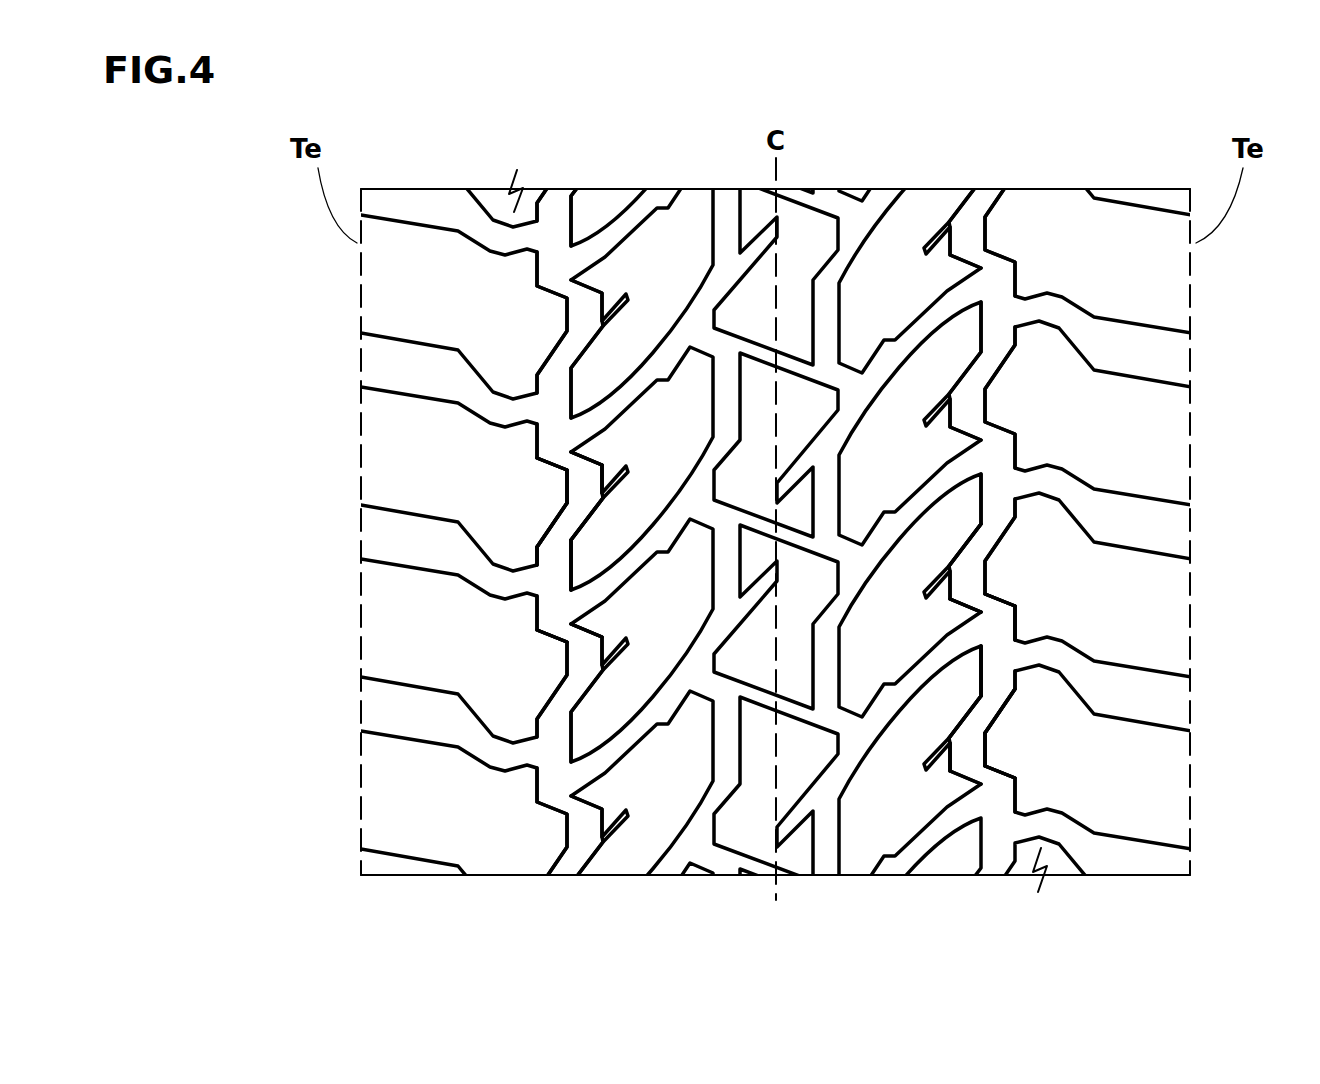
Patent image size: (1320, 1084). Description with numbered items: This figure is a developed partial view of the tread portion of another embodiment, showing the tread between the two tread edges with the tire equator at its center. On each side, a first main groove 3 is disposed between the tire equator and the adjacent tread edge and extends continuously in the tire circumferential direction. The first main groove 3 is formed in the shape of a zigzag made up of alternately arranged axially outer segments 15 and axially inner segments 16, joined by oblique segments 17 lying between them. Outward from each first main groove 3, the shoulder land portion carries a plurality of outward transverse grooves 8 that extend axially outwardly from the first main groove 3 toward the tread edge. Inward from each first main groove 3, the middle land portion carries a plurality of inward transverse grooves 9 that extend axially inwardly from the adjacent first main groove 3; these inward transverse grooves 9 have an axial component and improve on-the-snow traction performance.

The first main groove 3 is at (557, 224).
The outward transverse groove 8 is at (435, 715).
The inward transverse groove 9 is at (640, 735).
The axially outer segment 15 is at (555, 589).
The axially inner segment 16 is at (583, 487).
The oblique segment 17 is at (563, 523).